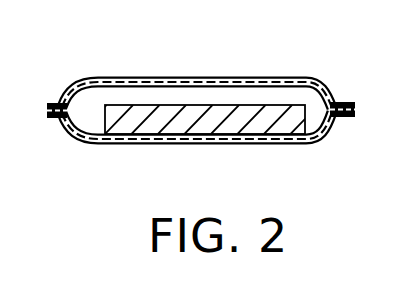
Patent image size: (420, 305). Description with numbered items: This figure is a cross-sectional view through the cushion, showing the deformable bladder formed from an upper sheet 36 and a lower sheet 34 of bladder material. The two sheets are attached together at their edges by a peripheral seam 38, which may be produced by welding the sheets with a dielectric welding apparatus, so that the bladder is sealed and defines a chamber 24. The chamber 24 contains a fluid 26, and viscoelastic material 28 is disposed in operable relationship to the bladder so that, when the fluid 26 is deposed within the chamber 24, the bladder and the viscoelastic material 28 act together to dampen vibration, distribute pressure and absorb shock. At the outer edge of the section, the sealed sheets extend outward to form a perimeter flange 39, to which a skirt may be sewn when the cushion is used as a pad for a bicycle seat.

The chamber 24 is at (157, 93).
The fluid 26 is at (235, 93).
The viscoelastic material 28 is at (228, 121).
The lower sheet 34 is at (308, 143).
The upper sheet 36 is at (312, 77).
The peripheral seam 38 is at (70, 105).
The perimeter flange 39 is at (62, 119).